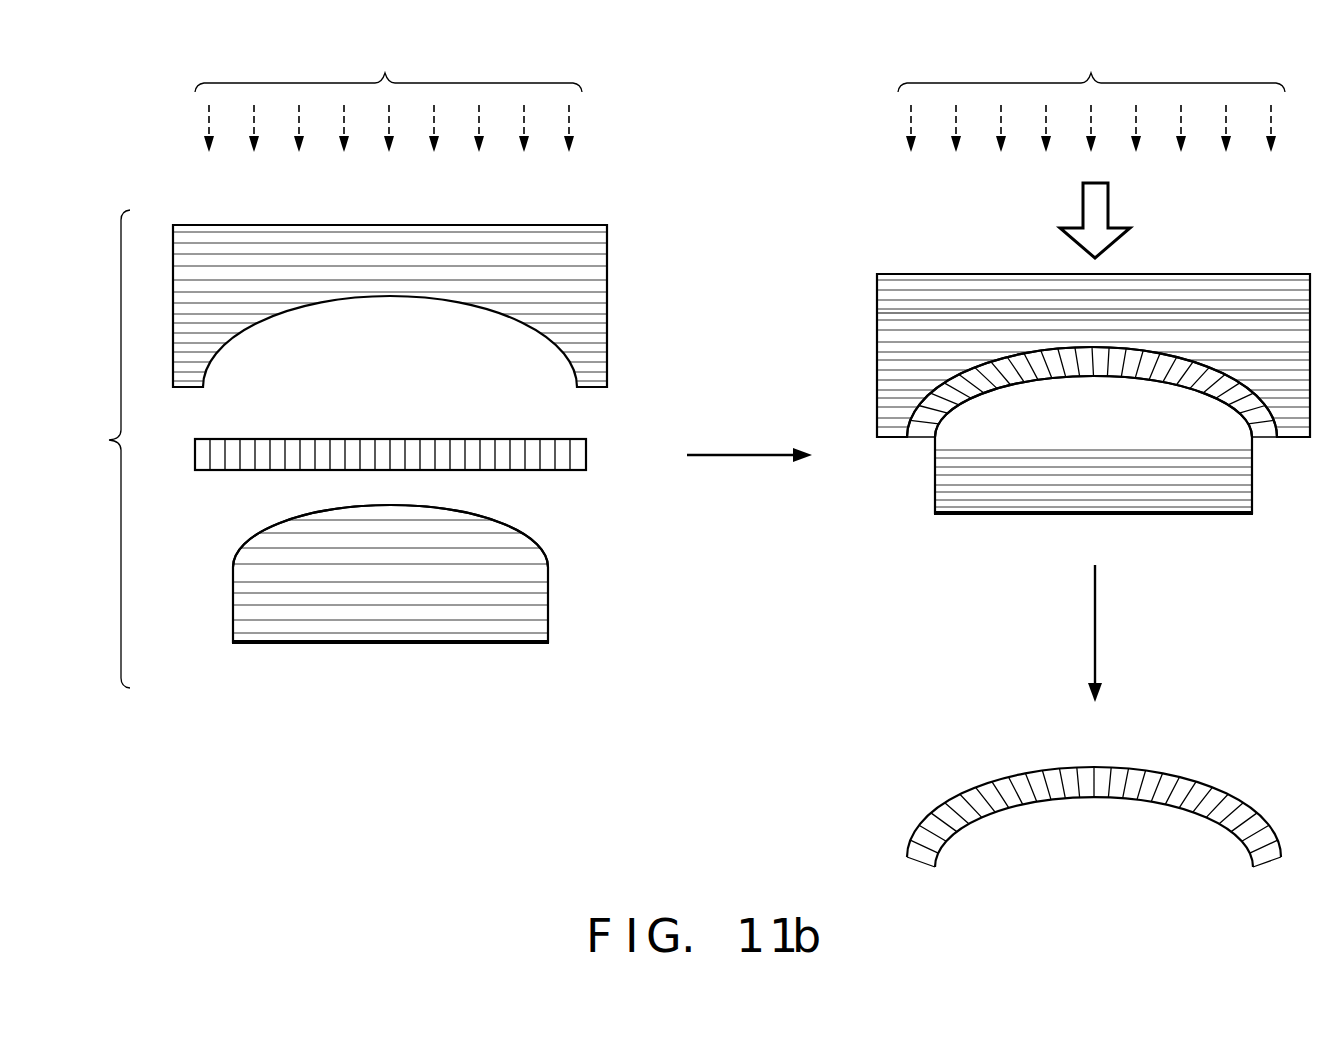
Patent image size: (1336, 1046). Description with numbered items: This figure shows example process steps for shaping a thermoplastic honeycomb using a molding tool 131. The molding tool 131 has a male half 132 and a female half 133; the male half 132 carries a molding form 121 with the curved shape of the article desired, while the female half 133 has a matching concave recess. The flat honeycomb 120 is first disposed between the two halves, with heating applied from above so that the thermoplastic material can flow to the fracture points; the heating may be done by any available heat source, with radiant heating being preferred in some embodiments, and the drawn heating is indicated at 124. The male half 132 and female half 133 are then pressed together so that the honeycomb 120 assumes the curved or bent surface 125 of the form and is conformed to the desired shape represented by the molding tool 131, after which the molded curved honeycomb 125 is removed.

The honeycomb 120 is at (528, 438).
The molding form 121 is at (268, 530).
The irradiation / light 124 is at (740, 97).
The curved or bent surface 125 is at (962, 797).
The molding tool 131 is at (98, 449).
The male half 132 is at (506, 646).
The female half 133 is at (432, 222).